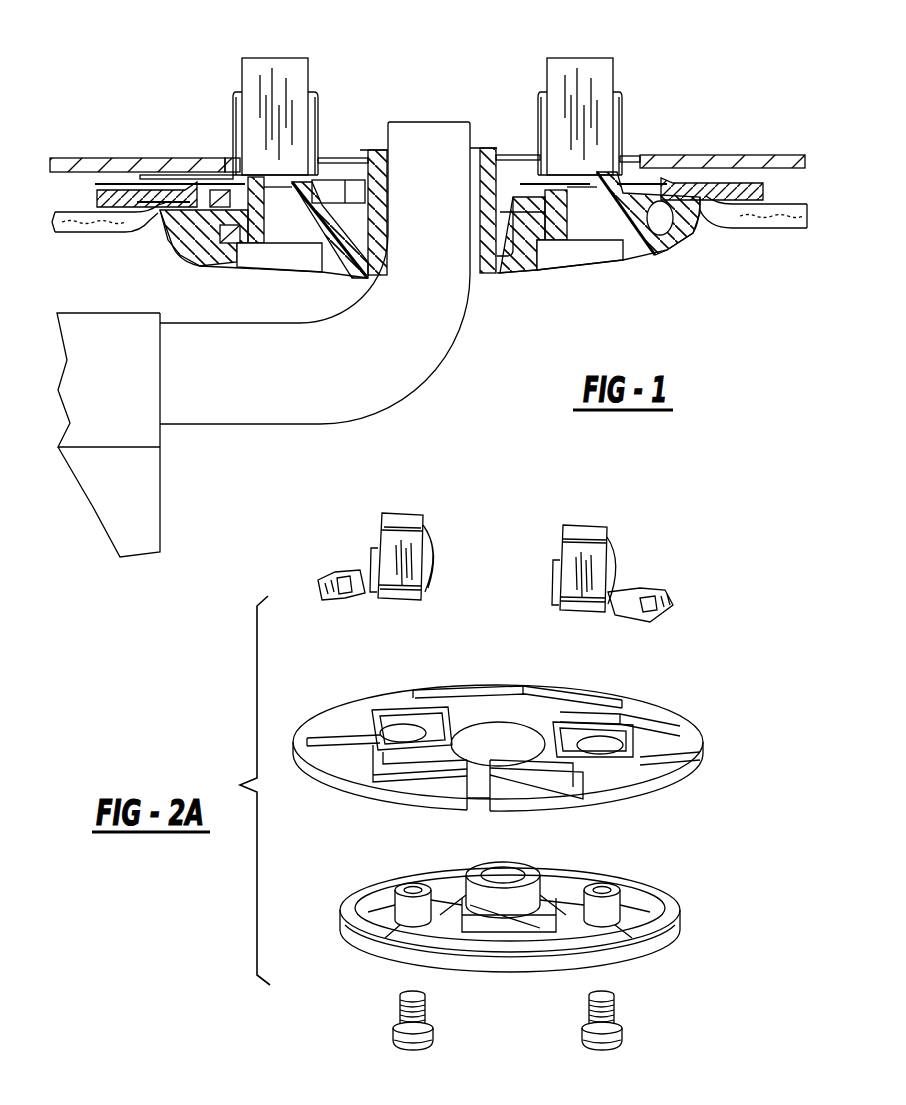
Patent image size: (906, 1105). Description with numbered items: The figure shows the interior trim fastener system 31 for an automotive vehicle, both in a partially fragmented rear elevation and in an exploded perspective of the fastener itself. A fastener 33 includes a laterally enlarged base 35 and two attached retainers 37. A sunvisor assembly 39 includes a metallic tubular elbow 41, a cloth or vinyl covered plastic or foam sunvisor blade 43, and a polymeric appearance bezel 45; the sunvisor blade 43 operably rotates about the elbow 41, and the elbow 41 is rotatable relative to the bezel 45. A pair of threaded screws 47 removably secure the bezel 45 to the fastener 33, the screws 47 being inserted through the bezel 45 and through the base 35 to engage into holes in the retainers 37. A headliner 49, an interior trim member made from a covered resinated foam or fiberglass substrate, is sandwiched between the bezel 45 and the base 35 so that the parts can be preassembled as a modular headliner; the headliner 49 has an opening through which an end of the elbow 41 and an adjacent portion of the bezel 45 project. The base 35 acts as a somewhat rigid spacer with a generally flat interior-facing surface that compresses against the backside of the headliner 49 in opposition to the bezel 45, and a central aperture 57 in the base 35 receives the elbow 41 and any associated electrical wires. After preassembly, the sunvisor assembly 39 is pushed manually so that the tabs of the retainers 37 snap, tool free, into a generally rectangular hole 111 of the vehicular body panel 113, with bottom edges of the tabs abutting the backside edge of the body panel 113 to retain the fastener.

In FIG. 1, the interior trim fastener system 31 is at (110, 58).
In FIG. 2A, the fastener 33 is at (682, 475).
In FIG. 1, the base 35 is at (112, 199).
In FIG. 2A, the base 35 is at (642, 715).
In FIG. 1, the retainer 37 is at (272, 68).
In FIG. 2A, the retainer 37 is at (383, 534).
In FIG. 1, the sunvisor assembly 39 is at (79, 526).
In FIG. 1, the elbow 41 is at (397, 380).
In FIG. 1, the sunvisor blade 43 is at (118, 408).
In FIG. 1, the bezel 45 is at (186, 242).
In FIG. 2A, the bezel 45 is at (643, 945).
In FIG. 2A, the threaded screws 47 is at (400, 1040).
In FIG. 1, the headliner 49 is at (115, 222).
In FIG. 1, the central aperture 57 is at (368, 150).
In FIG. 1, the hole 111 is at (226, 160).
In FIG. 1, the vehicular body panel 113 is at (118, 160).